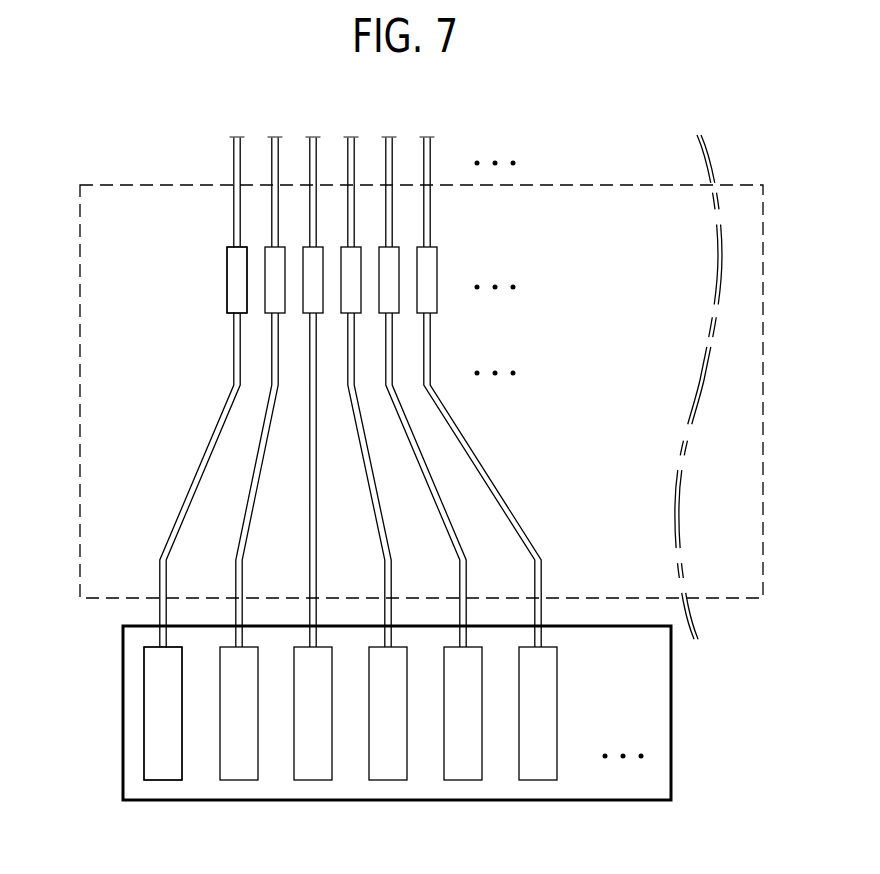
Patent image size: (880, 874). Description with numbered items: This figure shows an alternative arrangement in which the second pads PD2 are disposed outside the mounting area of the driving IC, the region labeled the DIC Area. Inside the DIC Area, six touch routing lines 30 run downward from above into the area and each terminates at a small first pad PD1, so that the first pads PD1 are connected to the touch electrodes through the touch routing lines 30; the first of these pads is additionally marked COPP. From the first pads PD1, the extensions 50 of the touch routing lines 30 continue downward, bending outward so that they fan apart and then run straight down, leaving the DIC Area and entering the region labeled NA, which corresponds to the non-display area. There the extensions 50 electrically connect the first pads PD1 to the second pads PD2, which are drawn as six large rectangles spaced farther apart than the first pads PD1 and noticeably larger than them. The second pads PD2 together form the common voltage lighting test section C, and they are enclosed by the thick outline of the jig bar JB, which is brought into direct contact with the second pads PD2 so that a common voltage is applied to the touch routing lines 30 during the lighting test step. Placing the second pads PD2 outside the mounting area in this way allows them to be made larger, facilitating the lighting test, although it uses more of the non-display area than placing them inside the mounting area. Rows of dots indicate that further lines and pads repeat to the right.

The touch routing lines 30 is at (431, 207).
The first pads PD1 is at (437, 265).
The extensions 50 is at (431, 339).
The chip on panel pad COPP is at (212, 284).
The second pads PD2 is at (558, 708).
The common voltage lighting test section C is at (130, 713).
The jig bar JB is at (122, 768).
The non-display area NA is at (358, 711).
The driver IC area DIC Area is at (178, 223).